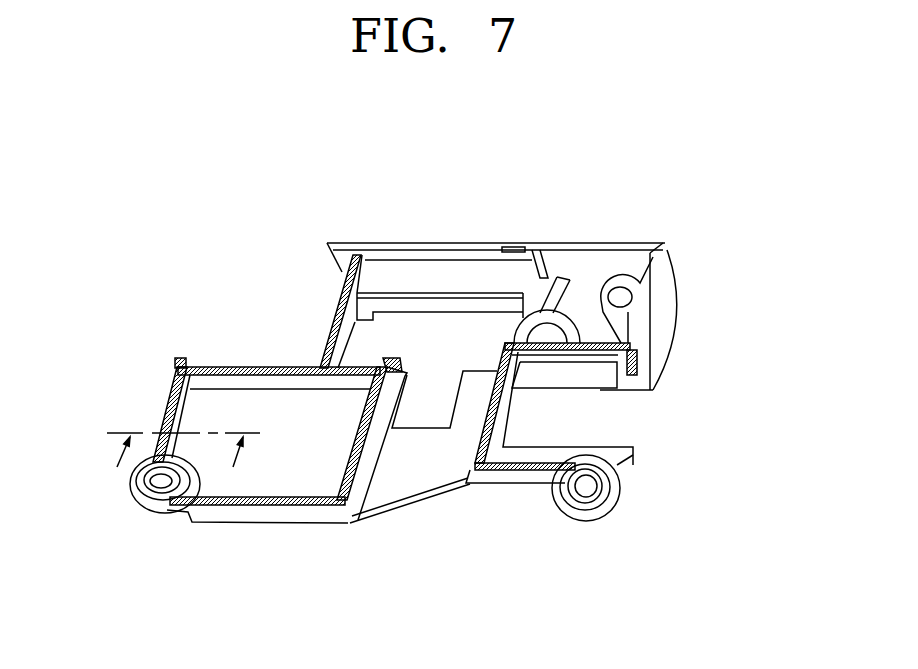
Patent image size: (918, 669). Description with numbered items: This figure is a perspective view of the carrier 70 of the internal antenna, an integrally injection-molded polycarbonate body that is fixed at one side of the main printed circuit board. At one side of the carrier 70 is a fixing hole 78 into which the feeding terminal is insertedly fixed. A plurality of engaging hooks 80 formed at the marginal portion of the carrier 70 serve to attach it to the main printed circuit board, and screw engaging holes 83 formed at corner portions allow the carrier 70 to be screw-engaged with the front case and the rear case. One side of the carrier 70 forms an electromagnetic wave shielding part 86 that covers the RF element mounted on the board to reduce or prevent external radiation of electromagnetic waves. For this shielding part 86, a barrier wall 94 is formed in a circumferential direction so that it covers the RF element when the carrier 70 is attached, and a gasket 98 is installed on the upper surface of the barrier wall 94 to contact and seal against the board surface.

The carrier 70 is at (423, 383).
The fixing hole 78 is at (626, 298).
The engaging hook 80 is at (181, 360).
The screw engaging hole 83 is at (148, 517).
The electromagnetic wave shielding part 86 is at (296, 489).
The barrier wall 94 is at (358, 495).
The gasket 98 is at (170, 395).